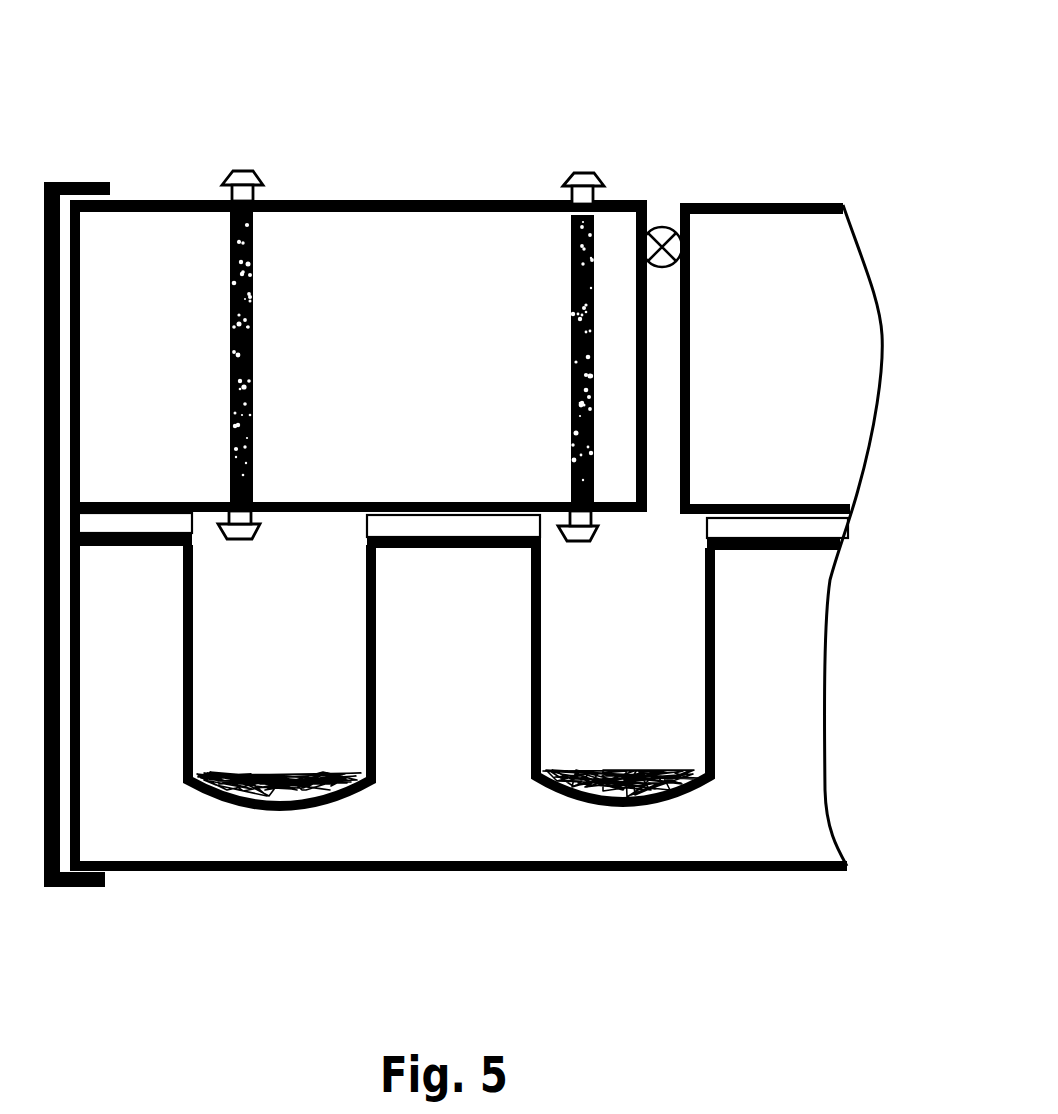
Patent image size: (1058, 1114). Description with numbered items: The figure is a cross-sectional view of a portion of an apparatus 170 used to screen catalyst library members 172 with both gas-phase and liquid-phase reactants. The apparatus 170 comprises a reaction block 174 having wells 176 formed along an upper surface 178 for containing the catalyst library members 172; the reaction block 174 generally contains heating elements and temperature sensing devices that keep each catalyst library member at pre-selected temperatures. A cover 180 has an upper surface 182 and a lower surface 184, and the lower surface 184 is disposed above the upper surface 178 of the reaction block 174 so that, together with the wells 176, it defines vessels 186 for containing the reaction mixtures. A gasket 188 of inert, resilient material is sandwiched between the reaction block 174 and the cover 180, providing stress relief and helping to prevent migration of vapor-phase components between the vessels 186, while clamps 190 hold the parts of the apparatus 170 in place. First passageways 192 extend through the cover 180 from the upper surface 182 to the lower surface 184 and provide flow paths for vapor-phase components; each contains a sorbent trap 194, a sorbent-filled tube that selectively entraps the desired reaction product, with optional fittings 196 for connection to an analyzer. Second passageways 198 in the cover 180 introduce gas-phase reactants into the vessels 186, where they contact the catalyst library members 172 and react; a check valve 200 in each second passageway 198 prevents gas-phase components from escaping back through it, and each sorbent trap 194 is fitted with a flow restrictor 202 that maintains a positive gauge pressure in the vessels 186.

The apparatus 170 is at (732, 124).
The catalyst library members 172 is at (268, 772).
The reaction block 174 is at (772, 832).
The wells 176 is at (377, 620).
The upper surface 178 is at (770, 540).
The cover 180 is at (764, 393).
The upper surface 182 is at (336, 199).
The lower surface 184 is at (313, 517).
The vessels 186 is at (253, 625).
The gasket 188 is at (133, 525).
The clamps 190 is at (74, 182).
The first passageways 192 is at (255, 338).
The sorbent trap 194 is at (254, 263).
The fittings 196 is at (232, 172).
The second passageways 198 is at (663, 312).
The check valve 200 is at (661, 226).
The flow restrictor 202 is at (603, 195).